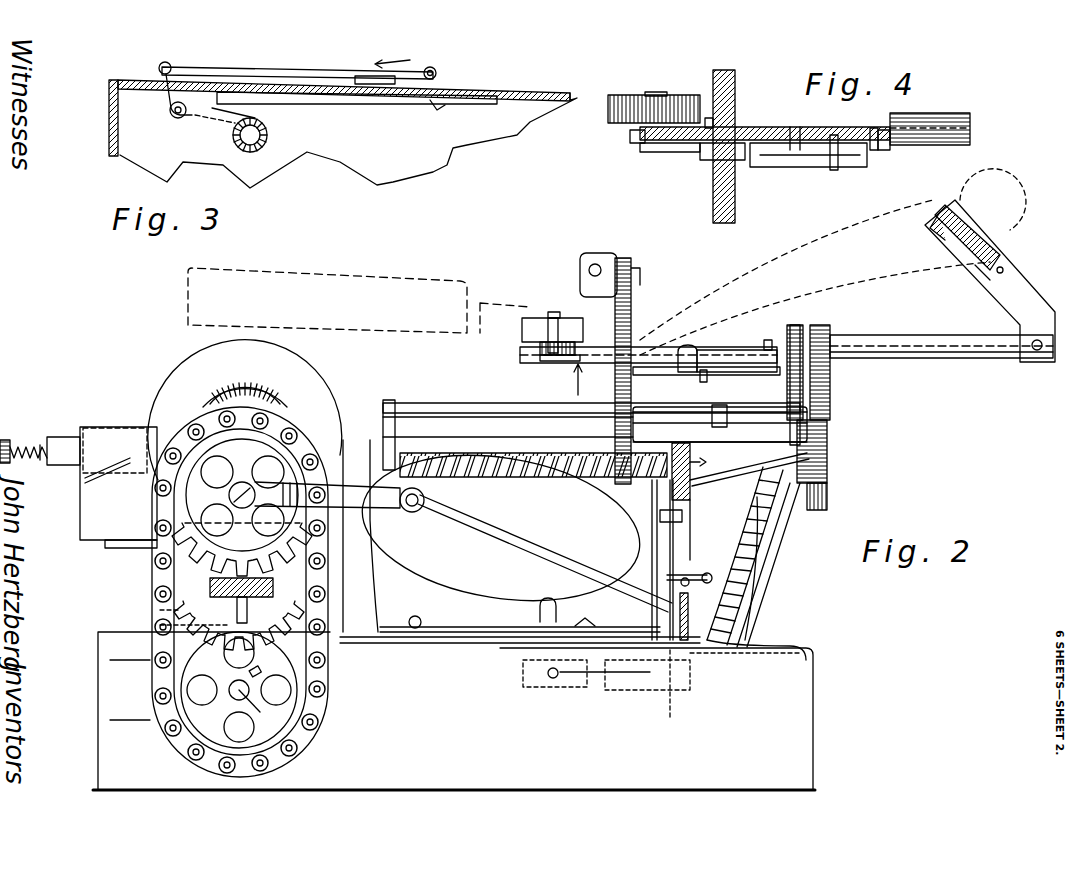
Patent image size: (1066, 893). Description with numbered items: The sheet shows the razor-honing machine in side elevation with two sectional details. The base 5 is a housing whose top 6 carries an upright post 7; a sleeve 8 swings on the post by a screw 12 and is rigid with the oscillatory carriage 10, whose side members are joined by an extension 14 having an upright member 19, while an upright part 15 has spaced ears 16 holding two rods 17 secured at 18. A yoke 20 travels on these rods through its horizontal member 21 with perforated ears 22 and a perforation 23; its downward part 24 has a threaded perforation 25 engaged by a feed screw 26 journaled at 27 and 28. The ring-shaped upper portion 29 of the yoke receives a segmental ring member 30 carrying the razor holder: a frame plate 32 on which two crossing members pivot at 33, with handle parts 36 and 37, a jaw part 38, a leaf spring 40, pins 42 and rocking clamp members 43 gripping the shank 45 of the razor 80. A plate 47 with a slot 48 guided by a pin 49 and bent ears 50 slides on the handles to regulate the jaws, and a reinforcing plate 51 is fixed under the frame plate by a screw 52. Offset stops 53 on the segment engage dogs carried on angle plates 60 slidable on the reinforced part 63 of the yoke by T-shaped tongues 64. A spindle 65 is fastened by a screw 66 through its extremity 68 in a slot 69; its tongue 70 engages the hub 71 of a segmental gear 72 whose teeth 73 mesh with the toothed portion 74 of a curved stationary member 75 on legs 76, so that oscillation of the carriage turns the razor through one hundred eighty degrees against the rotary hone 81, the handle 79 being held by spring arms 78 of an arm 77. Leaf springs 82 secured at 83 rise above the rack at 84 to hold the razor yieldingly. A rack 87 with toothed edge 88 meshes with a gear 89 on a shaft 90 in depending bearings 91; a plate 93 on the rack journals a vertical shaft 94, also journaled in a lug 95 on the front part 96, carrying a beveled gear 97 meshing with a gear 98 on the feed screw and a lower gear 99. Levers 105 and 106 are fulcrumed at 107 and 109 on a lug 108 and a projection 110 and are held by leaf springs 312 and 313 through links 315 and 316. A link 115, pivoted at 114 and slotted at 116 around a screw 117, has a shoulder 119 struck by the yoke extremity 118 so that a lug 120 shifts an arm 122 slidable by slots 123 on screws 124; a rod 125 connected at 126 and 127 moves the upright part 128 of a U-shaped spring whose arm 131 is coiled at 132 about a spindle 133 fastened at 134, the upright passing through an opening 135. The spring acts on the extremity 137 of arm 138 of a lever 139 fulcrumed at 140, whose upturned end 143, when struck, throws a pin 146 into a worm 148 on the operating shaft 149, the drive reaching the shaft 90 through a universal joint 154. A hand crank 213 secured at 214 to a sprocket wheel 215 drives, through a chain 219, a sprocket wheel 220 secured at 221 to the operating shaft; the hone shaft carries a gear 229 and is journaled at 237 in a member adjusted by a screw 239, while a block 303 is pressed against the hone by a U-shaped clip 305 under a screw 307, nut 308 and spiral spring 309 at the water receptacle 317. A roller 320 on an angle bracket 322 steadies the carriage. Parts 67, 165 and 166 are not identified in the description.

In FIG. 3, the base 5 is at (108, 114).
In FIG. 2, the base 5 is at (720, 797).
In FIG. 2, the top plate 6 is at (572, 379).
In FIG. 2, the upright post 7 is at (372, 570).
In FIG. 2, the sleeve 8 is at (354, 407).
In FIG. 2, the oscillatory carriage 10 is at (518, 491).
In FIG. 2, the screw 12 is at (360, 440).
In FIG. 2, the extension 14 is at (738, 462).
In FIG. 2, the upright part 15 is at (508, 427).
In FIG. 2, the spaced ears 16 is at (392, 400).
In FIG. 2, the rods 17 is at (450, 405).
In FIG. 2, the rod securing point 18 is at (790, 398).
In FIG. 2, the upright member 19 is at (830, 397).
In FIG. 2, the yoke 20 is at (720, 409).
In FIG. 2, the horizontal member 21 is at (690, 407).
In FIG. 2, the ears 22 is at (709, 422).
In FIG. 2, the perforation 23 is at (615, 424).
In FIG. 2, the downward part 24 is at (545, 511).
In FIG. 2, the threaded perforation 25 is at (572, 519).
In FIG. 2, the feed screw 26 is at (480, 478).
In FIG. 2, the feed screw journal 27 is at (720, 432).
In FIG. 2, the feed screw journal 28 is at (386, 440).
In FIG. 4, the upper portion of yoke 29 is at (735, 195).
In FIG. 2, the upper portion of yoke 29 is at (631, 330).
In FIG. 4, the segmental ring member 30 is at (735, 80).
In FIG. 4, the frame plate 32 is at (760, 127).
In FIG. 2, the frame plate 32 is at (660, 347).
In FIG. 4, the pivot screw 33 is at (705, 160).
In FIG. 2, the handle part 36 is at (700, 355).
In FIG. 4, the handle part 37 is at (835, 145).
In FIG. 4, the jaw part 38 is at (640, 147).
In FIG. 2, the jaw part 38 is at (540, 360).
In FIG. 4, the leaf spring 40 is at (630, 134).
In FIG. 4, the pins 42 is at (652, 92).
In FIG. 2, the pins 42 is at (520, 330).
In FIG. 4, the clamp members 43 is at (628, 95).
In FIG. 2, the clamp members 43 is at (540, 318).
In FIG. 2, the razor shank 45 is at (510, 308).
In FIG. 4, the plate 47 is at (790, 167).
In FIG. 2, the plate 47 is at (745, 375).
In FIG. 4, the slot 48 is at (805, 167).
In FIG. 4, the pin 49 is at (838, 168).
In FIG. 2, the pin 49 is at (710, 385).
In FIG. 2, the ears 50 is at (690, 350).
In FIG. 4, the reinforcing plate 51 is at (775, 125).
In FIG. 4, the screw 52 is at (802, 125).
In FIG. 4, the offset part 53 is at (708, 118).
In FIG. 2, the angle plates 60 is at (618, 253).
In FIG. 2, the reinforced part 63 is at (640, 272).
In FIG. 2, the T-shaped tongues 64 is at (631, 262).
In FIG. 4, the spindle 65 is at (940, 122).
In FIG. 2, the spindle 65 is at (895, 360).
In FIG. 4, the screw 66 is at (885, 130).
In FIG. 2, the screw 66 is at (768, 340).
In FIG. 4, the collar 67 is at (895, 148).
In FIG. 4, the spindle extremity 68 is at (874, 128).
In FIG. 4, the slot 69 is at (935, 146).
In FIG. 4, the tongue 70 is at (930, 113).
In FIG. 2, the tongue 70 is at (938, 334).
In FIG. 2, the hub 71 is at (830, 330).
In FIG. 2, the segmental gear 72 is at (830, 415).
In FIG. 2, the gear teeth 73 is at (828, 440).
In FIG. 2, the toothed portion 74 is at (828, 492).
In FIG. 2, the curved stationary member 75 is at (815, 510).
In FIG. 2, the legs 76 is at (792, 560).
In FIG. 2, the arm 77 is at (1000, 300).
In FIG. 2, the spring arms 78 is at (938, 236).
In FIG. 2, the razor handle 79 is at (868, 228).
In FIG. 2, the razor 80 is at (359, 290).
In FIG. 2, the rotary hone 81 is at (178, 368).
In FIG. 2, the leaf springs 82 is at (780, 530).
In FIG. 2, the spring securing point 83 is at (775, 642).
In FIG. 2, the spring upper parts 84 is at (770, 457).
In FIG. 2, the rack 87 is at (625, 670).
In FIG. 2, the toothed edge 88 is at (740, 690).
In FIG. 2, the gear 89 is at (675, 702).
In FIG. 2, the shaft 90 is at (655, 690).
In FIG. 2, the depending bearings 91 is at (728, 700).
In FIG. 2, the plate 93 is at (501, 528).
In FIG. 2, the vertical shaft 94 is at (652, 555).
In FIG. 2, the lug 95 is at (650, 475).
In FIG. 2, the front part 96 is at (690, 480).
In FIG. 2, the beveled gear 97 is at (586, 527).
In FIG. 2, the gear 98 is at (672, 450).
In FIG. 2, the gear 99 is at (628, 688).
In FIG. 2, the lever 105 is at (580, 572).
In FIG. 2, the lever 106 is at (590, 594).
In FIG. 2, the fulcrum 107 is at (685, 516).
In FIG. 2, the lug 108 is at (600, 549).
In FIG. 2, the fulcrum 109 is at (569, 544).
In FIG. 2, the projection 110 is at (526, 565).
In FIG. 2, the pivotal connection 114 is at (690, 605).
In FIG. 2, the link 115 is at (518, 548).
In FIG. 2, the slot 116 is at (370, 522).
In FIG. 2, the screw 117 is at (375, 545).
In FIG. 2, the yoke extremity 118 is at (540, 508).
In FIG. 2, the shoulder 119 is at (429, 497).
In FIG. 2, the lug 120 is at (580, 690).
In FIG. 3, the arm 122 is at (500, 90).
In FIG. 2, the arm 122 is at (452, 636).
In FIG. 3, the slots 123 is at (370, 78).
In FIG. 3, the screws 124 is at (400, 78).
In FIG. 2, the screws 124 is at (415, 616).
In FIG. 3, the rod 125 is at (318, 68).
In FIG. 2, the rod 125 is at (420, 580).
In FIG. 3, the rod connection 126 is at (437, 70).
In FIG. 2, the rod connection 126 is at (418, 616).
In FIG. 3, the rod connection 127 is at (168, 62).
In FIG. 3, the upright part 128 is at (138, 80).
In FIG. 3, the spring arm 131 is at (178, 116).
In FIG. 3, the coiled extremities 132 is at (170, 106).
In FIG. 3, the supporting spindle 133 is at (142, 117).
In FIG. 3, the spindle fastening 134 is at (199, 81).
In FIG. 3, the opening 135 is at (257, 48).
In FIG. 3, the arm extremity 137 is at (220, 98).
In FIG. 3, the lever arm 138 is at (405, 108).
In FIG. 3, the lever 139 is at (449, 110).
In FIG. 3, the fulcrum 140 is at (442, 135).
In FIG. 2, the upturned extremity 143 is at (523, 668).
In FIG. 3, the pin 146 is at (258, 118).
In FIG. 3, the worm 148 is at (233, 138).
In FIG. 3, the operating shaft 149 is at (262, 147).
In FIG. 2, the operating shaft 149 is at (264, 693).
In FIG. 2, the universal joint 154 is at (499, 739).
In FIG. 2, the stop 165 is at (532, 427).
In FIG. 2, the catch 166 is at (582, 619).
In FIG. 2, the hand crank 213 is at (335, 440).
In FIG. 2, the crank securing point 214 is at (243, 480).
In FIG. 2, the sprocket wheel 215 is at (118, 483).
In FIG. 2, the chain 219 is at (160, 575).
In FIG. 2, the sprocket wheel 220 is at (195, 673).
In FIG. 2, the sprocket securing point 221 is at (235, 692).
In FIG. 2, the gear 229 is at (246, 384).
In FIG. 2, the shaft journal 237 is at (268, 392).
In FIG. 2, the screw 239 is at (210, 585).
In FIG. 2, the block 303 is at (160, 430).
In FIG. 2, the U-shaped clip 305 is at (82, 440).
In FIG. 2, the screw 307 is at (42, 445).
In FIG. 2, the nut 308 is at (5, 440).
In FIG. 2, the spiral spring 309 is at (40, 445).
In FIG. 2, the leaf spring 312 is at (690, 530).
In FIG. 2, the leaf spring 313 is at (690, 548).
In FIG. 2, the link 315 is at (701, 572).
In FIG. 2, the link 316 is at (531, 610).
In FIG. 2, the water receptacle 317 is at (80, 520).
In FIG. 2, the roller 320 is at (806, 650).
In FIG. 2, the angle bracket 322 is at (720, 653).